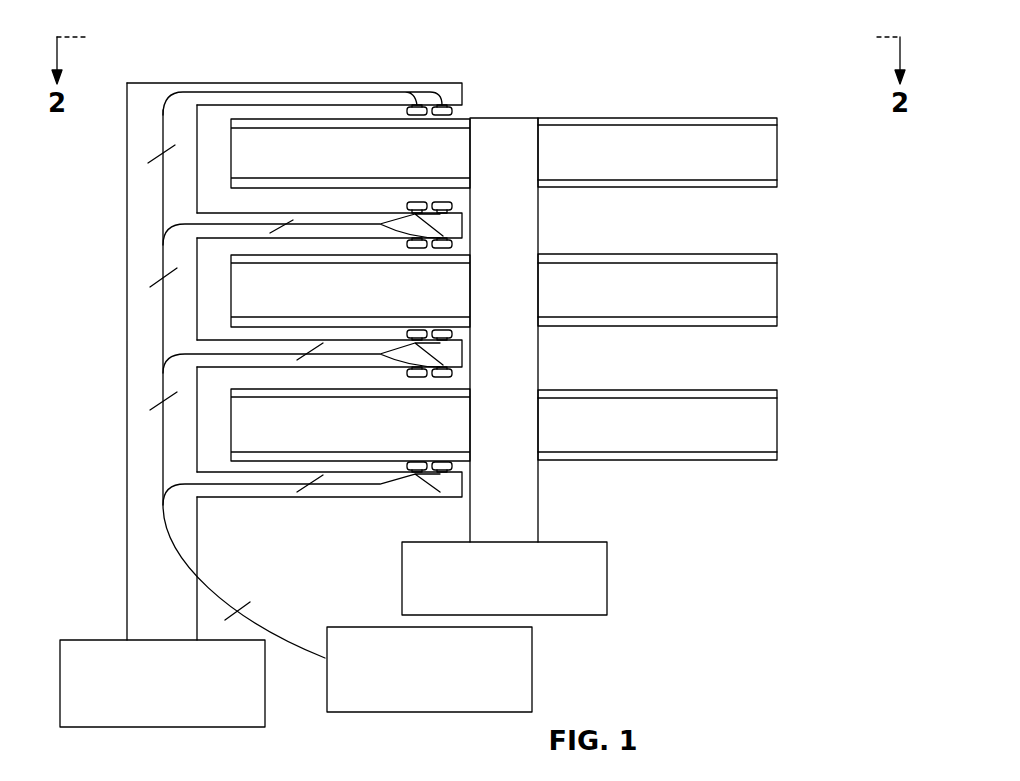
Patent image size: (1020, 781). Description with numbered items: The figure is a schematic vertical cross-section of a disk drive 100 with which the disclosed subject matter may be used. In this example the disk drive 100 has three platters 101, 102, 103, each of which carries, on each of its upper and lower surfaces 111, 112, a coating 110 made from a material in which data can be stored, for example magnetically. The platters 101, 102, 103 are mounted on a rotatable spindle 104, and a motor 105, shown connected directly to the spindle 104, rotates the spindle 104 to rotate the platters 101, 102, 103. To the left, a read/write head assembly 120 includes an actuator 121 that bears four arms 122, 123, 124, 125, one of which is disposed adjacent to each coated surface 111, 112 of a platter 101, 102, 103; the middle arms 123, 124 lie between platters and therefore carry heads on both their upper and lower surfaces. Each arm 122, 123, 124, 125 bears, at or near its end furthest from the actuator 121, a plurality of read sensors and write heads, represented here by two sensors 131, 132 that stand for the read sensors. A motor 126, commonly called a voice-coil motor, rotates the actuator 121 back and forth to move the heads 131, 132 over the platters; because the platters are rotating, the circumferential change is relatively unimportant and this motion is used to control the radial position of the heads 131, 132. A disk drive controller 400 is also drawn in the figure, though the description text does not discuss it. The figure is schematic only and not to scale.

The disk drive 100 is at (178, 28).
The platter 101 is at (778, 153).
The platter 102 is at (778, 290).
The platter 103 is at (778, 425).
The spindle 104 is at (510, 125).
The motor 105 is at (607, 578).
The coating 110 is at (778, 121).
The upper surface 111 is at (660, 118).
The lower surface 112 is at (660, 187).
The read/write head assembly 120 is at (108, 238).
The actuator 121 is at (127, 352).
The arm 122 is at (305, 83).
The arm 123 is at (290, 213).
The arm 124 is at (290, 340).
The arm 125 is at (290, 472).
The voice-coil motor 126 is at (107, 640).
The sensor 131 is at (443, 116).
The sensor 132 is at (417, 116).
The disk drive controller 400 is at (400, 627).